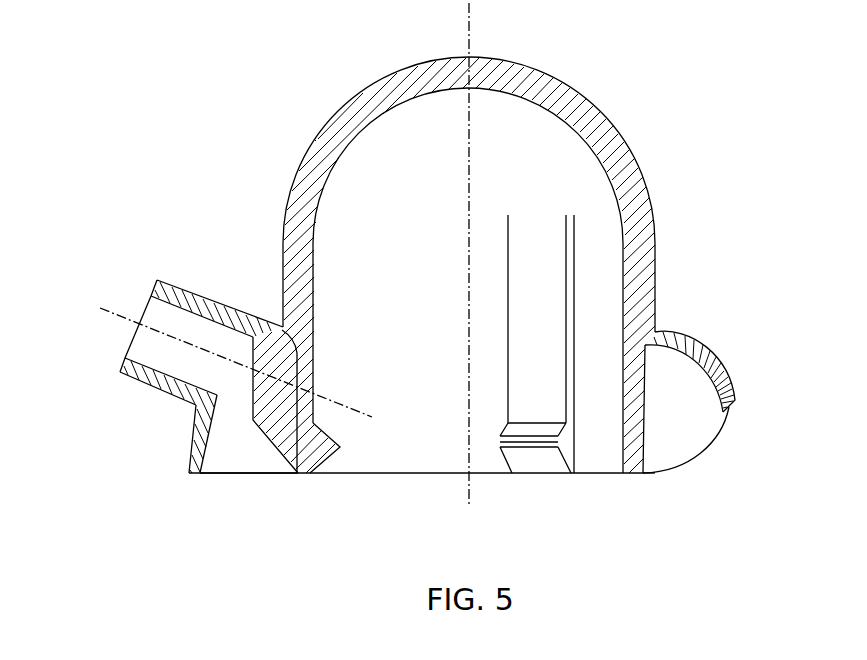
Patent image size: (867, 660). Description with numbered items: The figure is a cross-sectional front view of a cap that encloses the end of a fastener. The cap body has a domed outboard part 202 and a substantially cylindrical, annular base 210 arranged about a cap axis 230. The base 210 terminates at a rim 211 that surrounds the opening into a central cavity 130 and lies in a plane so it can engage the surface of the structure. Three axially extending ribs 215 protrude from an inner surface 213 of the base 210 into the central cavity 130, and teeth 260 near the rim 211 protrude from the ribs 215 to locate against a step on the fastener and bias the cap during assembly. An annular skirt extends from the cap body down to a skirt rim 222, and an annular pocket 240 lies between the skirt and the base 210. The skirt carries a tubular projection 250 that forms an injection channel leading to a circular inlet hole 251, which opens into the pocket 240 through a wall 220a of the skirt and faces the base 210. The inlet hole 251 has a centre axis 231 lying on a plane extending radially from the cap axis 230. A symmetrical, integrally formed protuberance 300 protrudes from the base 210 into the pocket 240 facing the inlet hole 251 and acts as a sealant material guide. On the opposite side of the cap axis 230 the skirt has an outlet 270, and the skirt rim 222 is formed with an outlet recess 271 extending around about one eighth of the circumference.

The domed outboard part 202 is at (368, 93).
The cap axis 230 is at (470, 43).
The central cavity 130 is at (593, 173).
The base 210 is at (284, 244).
The inner surface 213 is at (317, 233).
The ribs 215 is at (540, 252).
The teeth 260 is at (533, 462).
The annular pocket 240 is at (675, 365).
The outlet 270 is at (720, 440).
The outlet recess 271 is at (693, 465).
The rim 211 is at (630, 475).
The protuberance 300 is at (300, 390).
The inlet hole 251 is at (240, 378).
The tubular projection 250 is at (128, 362).
The centre axis 231 is at (120, 318).
The wall 220a is at (193, 430).
The skirt rim 222 is at (197, 473).